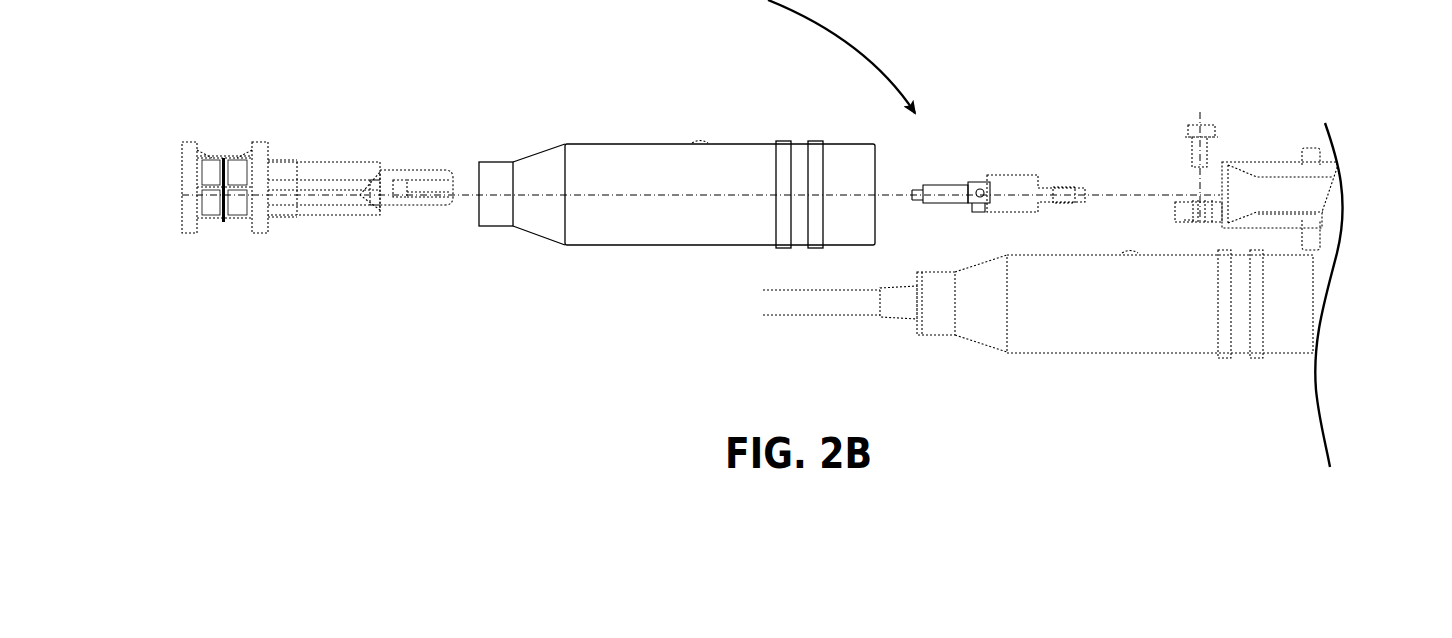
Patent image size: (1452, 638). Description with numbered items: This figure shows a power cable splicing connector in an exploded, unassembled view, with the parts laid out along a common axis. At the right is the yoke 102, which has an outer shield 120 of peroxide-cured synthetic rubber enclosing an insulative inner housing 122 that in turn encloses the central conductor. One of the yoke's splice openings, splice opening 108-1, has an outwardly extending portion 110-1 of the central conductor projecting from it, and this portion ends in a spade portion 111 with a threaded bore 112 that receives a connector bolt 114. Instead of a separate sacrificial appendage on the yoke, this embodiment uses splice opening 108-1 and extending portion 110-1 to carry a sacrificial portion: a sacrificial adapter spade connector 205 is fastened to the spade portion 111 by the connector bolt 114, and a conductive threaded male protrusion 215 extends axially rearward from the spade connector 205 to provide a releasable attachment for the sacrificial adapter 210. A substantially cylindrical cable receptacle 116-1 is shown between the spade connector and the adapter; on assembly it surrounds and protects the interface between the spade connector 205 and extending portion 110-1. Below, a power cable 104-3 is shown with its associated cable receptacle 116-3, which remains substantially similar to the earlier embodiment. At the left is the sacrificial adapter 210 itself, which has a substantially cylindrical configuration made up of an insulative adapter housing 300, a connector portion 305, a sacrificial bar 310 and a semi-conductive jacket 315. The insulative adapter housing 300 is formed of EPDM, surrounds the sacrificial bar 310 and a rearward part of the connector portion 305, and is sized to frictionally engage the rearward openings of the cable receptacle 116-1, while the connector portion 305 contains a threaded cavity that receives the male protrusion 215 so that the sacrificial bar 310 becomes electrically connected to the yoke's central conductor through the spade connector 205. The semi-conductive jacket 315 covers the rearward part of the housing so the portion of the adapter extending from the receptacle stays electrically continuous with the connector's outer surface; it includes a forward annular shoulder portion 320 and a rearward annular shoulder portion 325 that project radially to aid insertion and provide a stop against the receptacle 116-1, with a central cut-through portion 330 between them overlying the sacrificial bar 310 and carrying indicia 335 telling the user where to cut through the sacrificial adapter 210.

The yoke 102 is at (1337, 252).
The power cable 104-3 is at (803, 304).
The splice opening 108-1 is at (1280, 166).
The outwardly extending portion 110-1 is at (1240, 192).
The spade portion 111 is at (1184, 220).
The threaded bore 112 is at (1197, 207).
The connector bolt 114 is at (1202, 153).
The cable receptacle 116-1 is at (675, 170).
The cable receptacle 116-3 is at (1183, 330).
The outer shield 120 is at (1335, 168).
The insulative inner housing 122 is at (1290, 217).
The sacrificial adapter spade connector 205 is at (1013, 185).
The sacrificial adapter 210 is at (377, 126).
The threaded male protrusion 215 is at (945, 198).
The insulative adapter housing 300 is at (347, 210).
The connector portion 305 is at (428, 205).
The sacrificial bar 310 is at (330, 195).
The semi-conductive jacket 315 is at (373, 193).
The forward annular shoulder portion 320 is at (257, 230).
The rearward annular shoulder portion 325 is at (194, 228).
The cut-through portion 330 is at (234, 147).
The indicia 335 is at (215, 162).